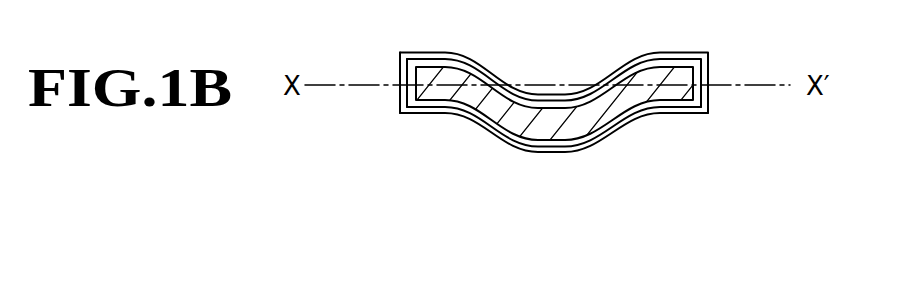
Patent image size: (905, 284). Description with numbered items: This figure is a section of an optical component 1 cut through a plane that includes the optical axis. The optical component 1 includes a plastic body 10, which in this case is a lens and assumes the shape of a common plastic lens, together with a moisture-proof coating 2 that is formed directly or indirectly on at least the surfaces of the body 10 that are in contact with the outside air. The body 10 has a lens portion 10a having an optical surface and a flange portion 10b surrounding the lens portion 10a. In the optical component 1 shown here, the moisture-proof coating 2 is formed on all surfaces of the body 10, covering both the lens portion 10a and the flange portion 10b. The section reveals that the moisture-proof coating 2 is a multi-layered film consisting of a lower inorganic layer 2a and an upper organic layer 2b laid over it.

The optical component 1 is at (645, 173).
The body 10 is at (400, 72).
The lens portion 10a is at (500, 132).
The flange portion 10b is at (677, 65).
The moisture-proof coating 2 is at (333, 168).
The lower inorganic layer 2a is at (411, 114).
The upper organic layer 2b is at (430, 108).